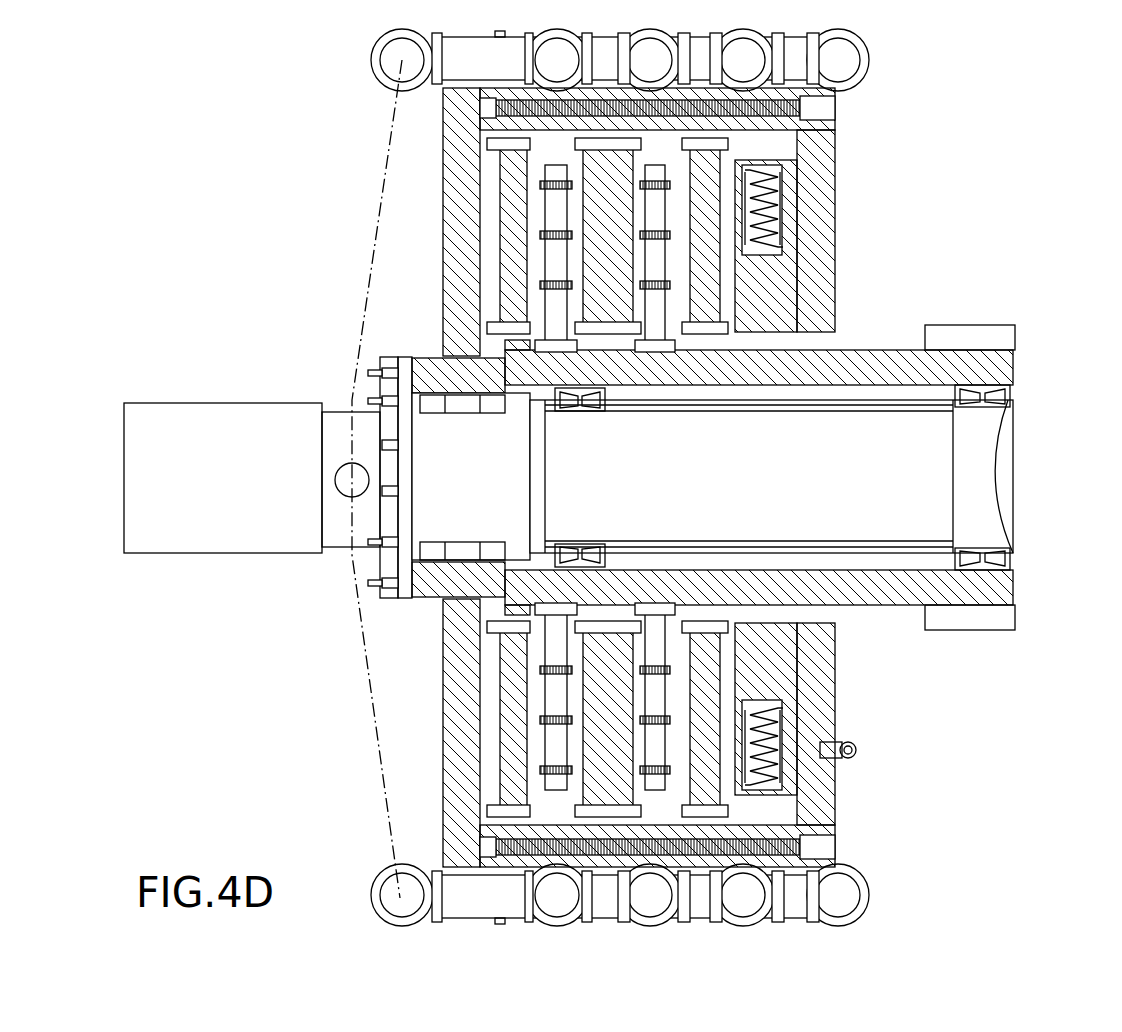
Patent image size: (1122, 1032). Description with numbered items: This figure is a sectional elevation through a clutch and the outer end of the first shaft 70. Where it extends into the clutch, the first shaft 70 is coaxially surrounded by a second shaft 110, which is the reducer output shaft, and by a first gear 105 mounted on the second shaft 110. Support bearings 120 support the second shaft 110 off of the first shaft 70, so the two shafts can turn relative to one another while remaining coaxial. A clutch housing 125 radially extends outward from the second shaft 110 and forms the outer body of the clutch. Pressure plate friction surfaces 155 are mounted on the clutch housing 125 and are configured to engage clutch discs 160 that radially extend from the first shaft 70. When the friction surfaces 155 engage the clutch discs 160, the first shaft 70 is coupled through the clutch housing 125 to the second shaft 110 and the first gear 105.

The first shaft 70 is at (443, 440).
The first gear 105 is at (990, 325).
The second shaft 110 is at (862, 352).
The support bearings 120 is at (612, 540).
The clutch housing 125 is at (452, 157).
The pressure plate friction surfaces 155 is at (645, 733).
The clutch discs 160 is at (550, 212).